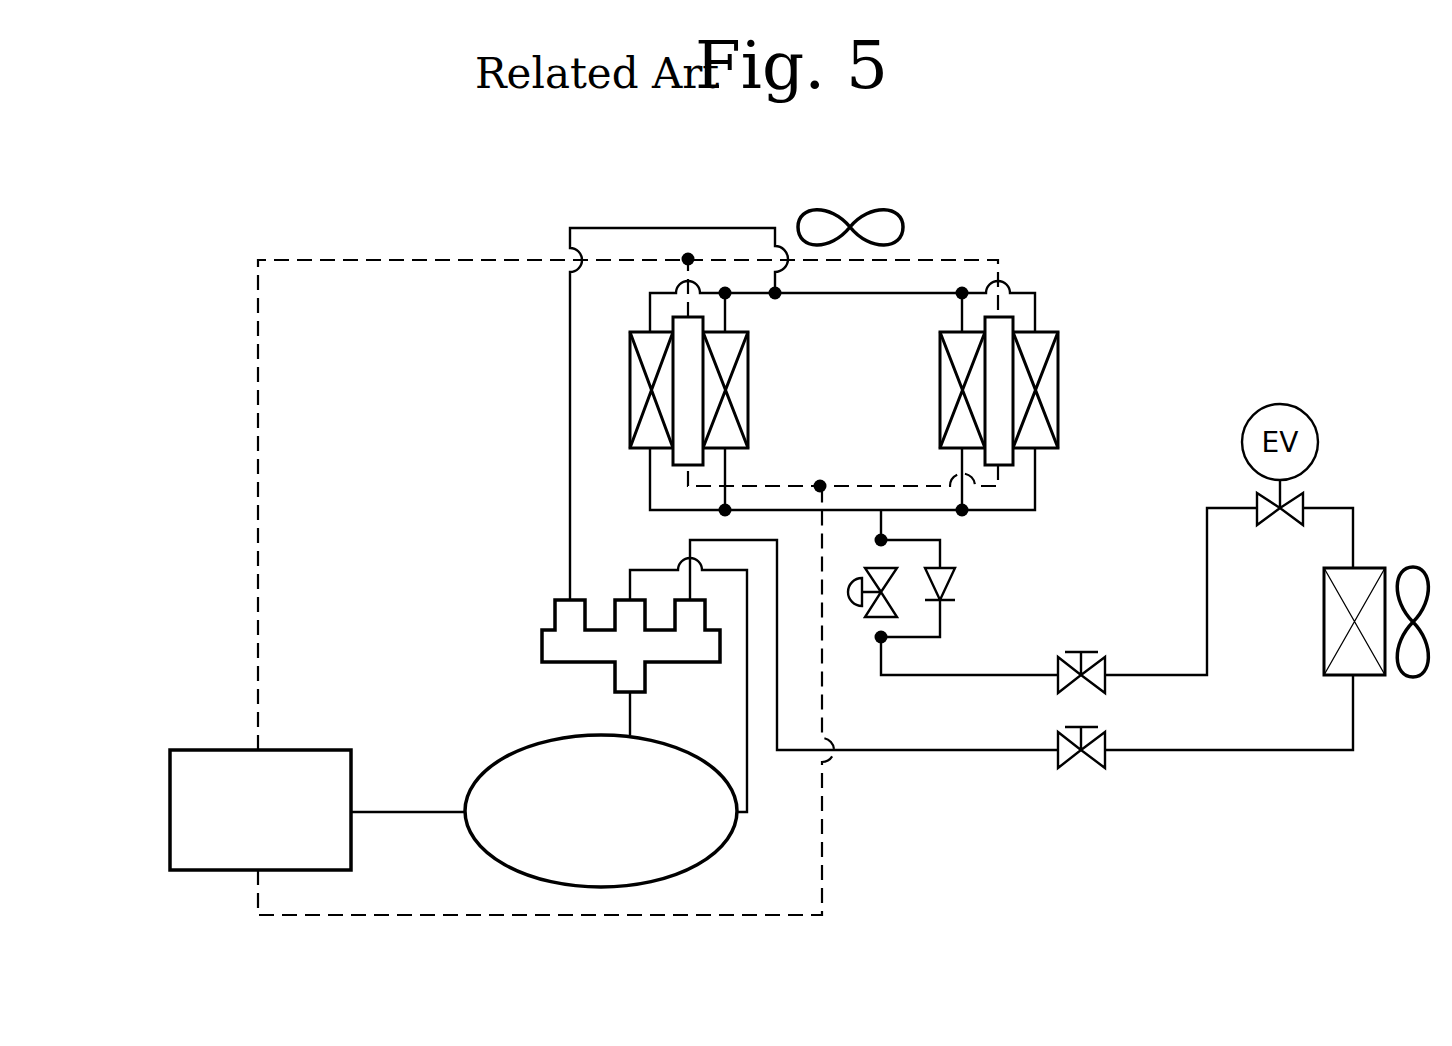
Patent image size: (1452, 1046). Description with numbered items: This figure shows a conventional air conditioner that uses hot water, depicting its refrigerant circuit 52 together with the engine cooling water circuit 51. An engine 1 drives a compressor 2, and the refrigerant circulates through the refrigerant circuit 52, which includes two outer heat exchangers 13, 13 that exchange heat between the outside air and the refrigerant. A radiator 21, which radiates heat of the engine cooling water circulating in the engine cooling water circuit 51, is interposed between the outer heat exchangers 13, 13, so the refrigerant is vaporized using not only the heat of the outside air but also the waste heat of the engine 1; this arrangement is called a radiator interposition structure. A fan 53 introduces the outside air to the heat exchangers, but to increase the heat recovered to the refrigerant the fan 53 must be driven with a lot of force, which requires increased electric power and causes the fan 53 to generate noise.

The engine 1 is at (210, 750).
The compressor 2 is at (588, 750).
The outer heat exchanger 13 is at (637, 377).
The radiator 21 is at (687, 443).
The engine cooling water circuit 51 is at (826, 849).
The refrigerant circuit 52 is at (1285, 750).
The fan 53 is at (876, 212).